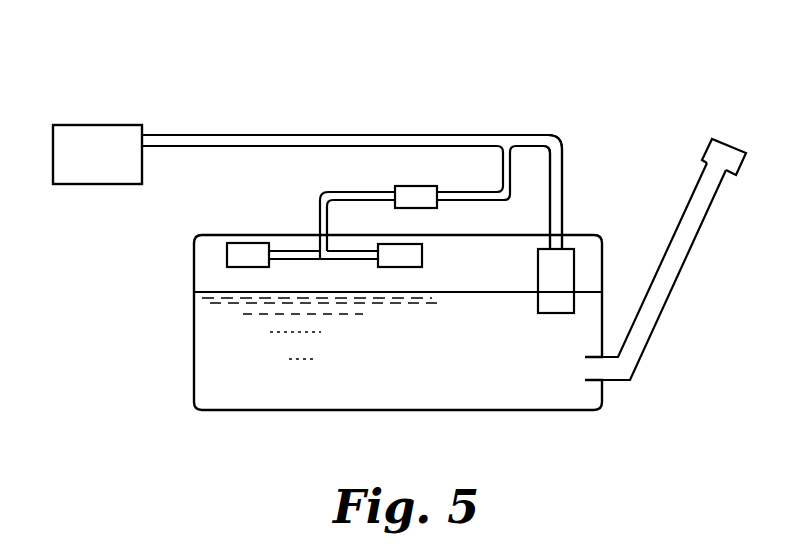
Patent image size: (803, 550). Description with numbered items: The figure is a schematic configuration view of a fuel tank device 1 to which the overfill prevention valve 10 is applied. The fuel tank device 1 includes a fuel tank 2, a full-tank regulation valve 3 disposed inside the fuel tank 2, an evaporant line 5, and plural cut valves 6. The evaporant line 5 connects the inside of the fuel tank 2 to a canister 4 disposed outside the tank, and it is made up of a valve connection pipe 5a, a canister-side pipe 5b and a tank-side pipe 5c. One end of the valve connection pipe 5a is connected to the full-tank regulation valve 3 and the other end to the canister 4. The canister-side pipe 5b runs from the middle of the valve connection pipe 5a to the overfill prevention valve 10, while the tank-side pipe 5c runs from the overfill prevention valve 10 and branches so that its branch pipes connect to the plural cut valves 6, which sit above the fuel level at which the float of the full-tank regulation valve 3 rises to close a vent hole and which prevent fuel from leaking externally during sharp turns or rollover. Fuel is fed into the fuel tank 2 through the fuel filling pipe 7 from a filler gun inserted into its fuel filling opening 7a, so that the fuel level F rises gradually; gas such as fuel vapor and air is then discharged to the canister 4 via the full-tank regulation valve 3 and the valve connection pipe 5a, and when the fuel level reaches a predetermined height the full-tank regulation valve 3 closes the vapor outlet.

The fuel tank device 1 is at (283, 133).
The fuel tank 2 is at (399, 412).
The full-tank regulation valve 3 is at (575, 253).
The canister 4 is at (94, 186).
The evaporant line 5 is at (523, 58).
The valve connection pipe 5a is at (487, 132).
The canister-side pipe 5b is at (463, 190).
The tank-side pipe 5c is at (357, 190).
The cut valve 6 is at (248, 243).
The fuel filling pipe 7 is at (663, 316).
The fuel filling opening 7a is at (733, 160).
The overfill prevention valve 10 is at (415, 185).
The fuel level F is at (504, 292).